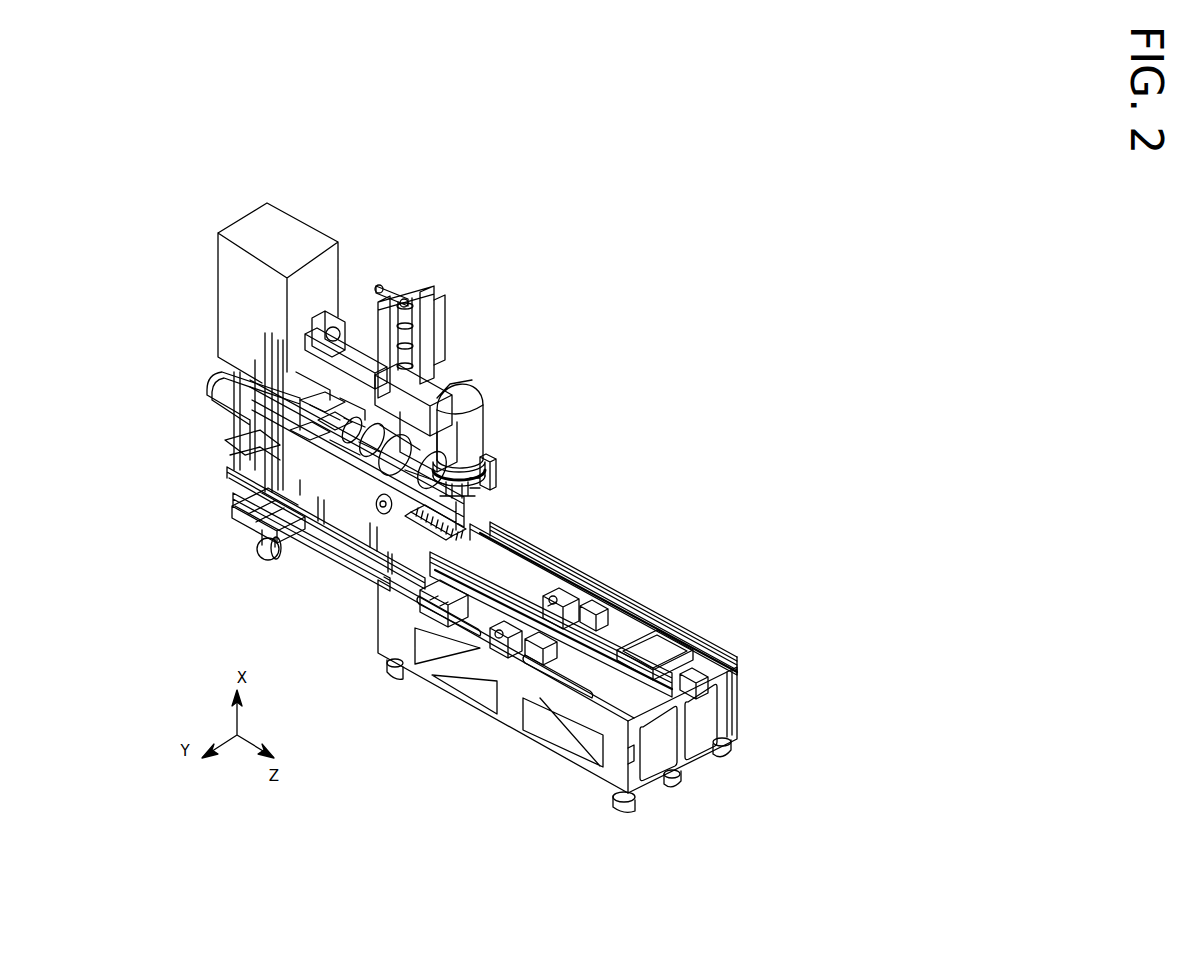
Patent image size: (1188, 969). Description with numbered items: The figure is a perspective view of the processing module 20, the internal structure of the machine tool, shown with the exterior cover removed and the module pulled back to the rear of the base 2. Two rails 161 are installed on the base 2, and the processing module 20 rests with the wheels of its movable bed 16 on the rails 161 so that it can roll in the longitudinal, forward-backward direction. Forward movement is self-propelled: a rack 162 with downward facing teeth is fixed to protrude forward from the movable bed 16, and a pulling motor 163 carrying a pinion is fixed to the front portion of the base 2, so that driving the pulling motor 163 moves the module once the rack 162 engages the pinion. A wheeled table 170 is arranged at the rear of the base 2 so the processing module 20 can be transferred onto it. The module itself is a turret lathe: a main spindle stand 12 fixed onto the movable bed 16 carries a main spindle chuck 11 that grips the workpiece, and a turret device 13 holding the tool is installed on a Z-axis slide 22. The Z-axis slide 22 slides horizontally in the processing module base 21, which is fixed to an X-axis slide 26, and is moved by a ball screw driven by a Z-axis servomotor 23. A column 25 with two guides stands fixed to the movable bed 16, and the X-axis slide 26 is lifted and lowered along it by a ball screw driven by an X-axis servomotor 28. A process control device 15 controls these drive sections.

The base 2 is at (512, 716).
The main spindle chuck 11 is at (352, 535).
The main spindle stand 12 is at (347, 520).
The turret device 13 is at (490, 455).
The process control device 15 is at (238, 283).
The movable bed 16 is at (337, 485).
The processing module 20 is at (356, 429).
The processing module base 21 is at (348, 338).
The Z-axis slide 22 is at (445, 405).
The Z-axis servomotor 23 is at (322, 310).
The column 25 is at (437, 325).
The X-axis slide 26 is at (435, 367).
The X-axis servomotor 28 is at (378, 293).
The rails 161 is at (668, 613).
The rack 162 is at (497, 527).
The pulling motor 163 is at (710, 648).
The wheeled table 170 is at (248, 480).